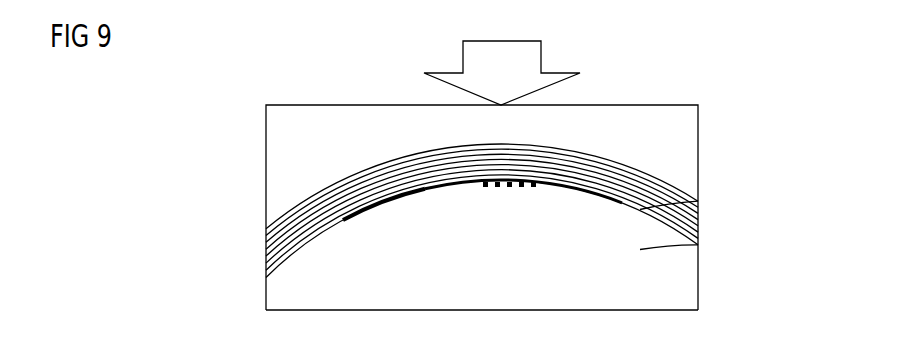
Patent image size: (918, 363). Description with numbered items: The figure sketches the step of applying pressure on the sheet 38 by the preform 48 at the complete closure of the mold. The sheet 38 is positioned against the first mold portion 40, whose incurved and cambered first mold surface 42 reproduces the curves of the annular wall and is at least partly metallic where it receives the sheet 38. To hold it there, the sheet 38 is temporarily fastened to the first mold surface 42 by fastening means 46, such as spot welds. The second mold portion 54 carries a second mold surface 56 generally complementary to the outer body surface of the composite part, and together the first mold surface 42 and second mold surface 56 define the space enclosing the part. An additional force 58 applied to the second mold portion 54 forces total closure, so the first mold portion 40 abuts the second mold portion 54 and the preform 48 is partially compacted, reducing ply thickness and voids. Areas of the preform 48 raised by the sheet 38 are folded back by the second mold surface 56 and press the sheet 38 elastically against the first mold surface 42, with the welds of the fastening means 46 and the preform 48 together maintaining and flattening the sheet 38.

The sheet 38 is at (431, 191).
The first mold portion 40 is at (266, 293).
The first mold surface 42 is at (343, 222).
The fastening means 46 is at (514, 188).
The preform 48 is at (700, 221).
The second mold portion 54 is at (266, 162).
The second mold surface 56 is at (307, 198).
The applied force 58 is at (541, 52).